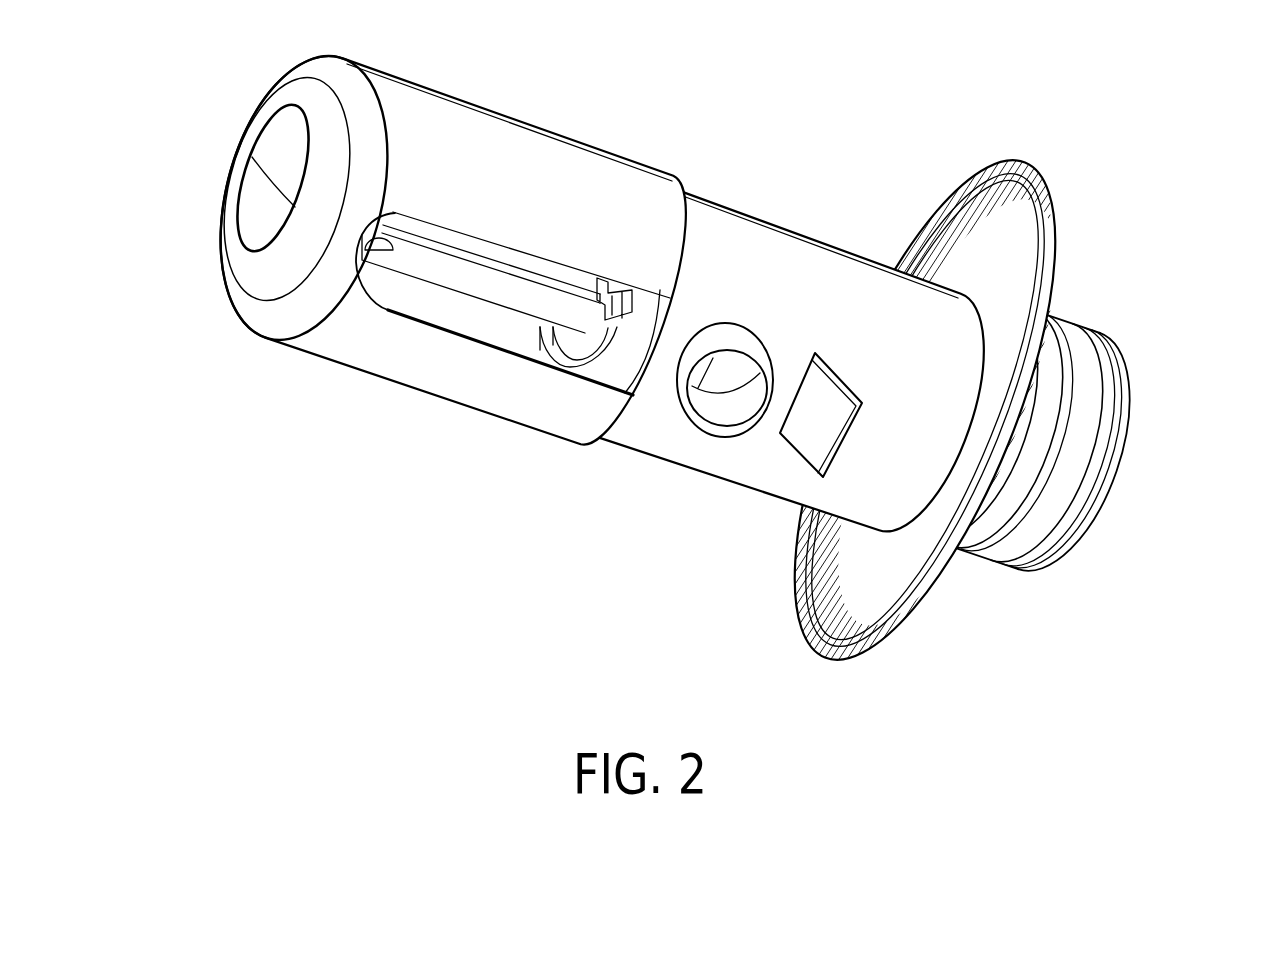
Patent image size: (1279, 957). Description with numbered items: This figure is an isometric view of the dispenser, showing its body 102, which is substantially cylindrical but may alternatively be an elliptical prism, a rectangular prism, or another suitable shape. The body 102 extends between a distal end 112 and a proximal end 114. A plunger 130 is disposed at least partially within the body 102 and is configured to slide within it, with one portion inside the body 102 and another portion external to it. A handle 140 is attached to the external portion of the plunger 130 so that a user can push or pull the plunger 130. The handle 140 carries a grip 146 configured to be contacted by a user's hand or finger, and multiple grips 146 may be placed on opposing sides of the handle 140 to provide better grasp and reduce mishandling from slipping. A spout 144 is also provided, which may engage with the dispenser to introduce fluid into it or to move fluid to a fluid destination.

The body 102 is at (792, 250).
The distal end 112 is at (1107, 493).
The proximal end 114 is at (252, 188).
The plunger 130 is at (515, 297).
The handle 140 is at (367, 352).
The spout 144 is at (717, 417).
The grip 146 is at (430, 207).